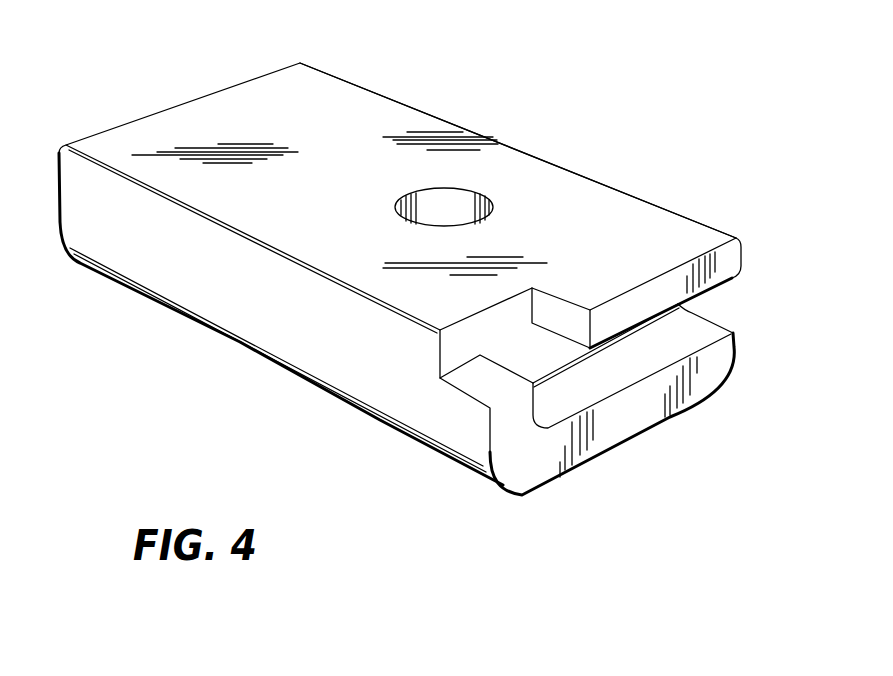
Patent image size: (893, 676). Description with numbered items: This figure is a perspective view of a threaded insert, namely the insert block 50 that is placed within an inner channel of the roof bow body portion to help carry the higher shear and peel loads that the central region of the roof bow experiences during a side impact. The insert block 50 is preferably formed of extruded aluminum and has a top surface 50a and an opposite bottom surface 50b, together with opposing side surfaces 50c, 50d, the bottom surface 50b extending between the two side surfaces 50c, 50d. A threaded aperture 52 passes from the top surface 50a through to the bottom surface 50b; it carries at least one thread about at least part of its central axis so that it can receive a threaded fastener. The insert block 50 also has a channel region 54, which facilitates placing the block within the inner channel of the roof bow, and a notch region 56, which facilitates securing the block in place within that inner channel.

The insert block 50 is at (172, 62).
The top surface 50a is at (355, 110).
The bottom surface 50b is at (477, 477).
The side surface 50c is at (185, 268).
The side surface 50d is at (648, 198).
The threaded aperture 52 is at (462, 220).
The channel region 54 is at (622, 365).
The notch region 56 is at (493, 330).